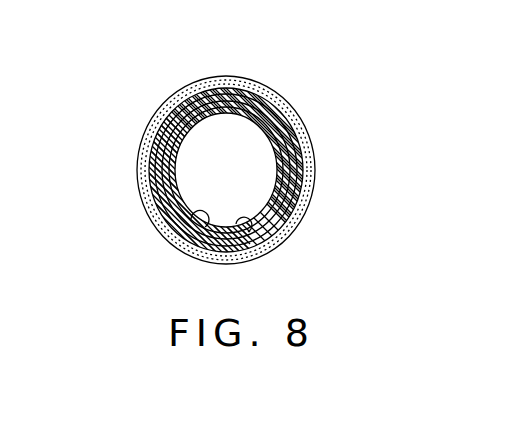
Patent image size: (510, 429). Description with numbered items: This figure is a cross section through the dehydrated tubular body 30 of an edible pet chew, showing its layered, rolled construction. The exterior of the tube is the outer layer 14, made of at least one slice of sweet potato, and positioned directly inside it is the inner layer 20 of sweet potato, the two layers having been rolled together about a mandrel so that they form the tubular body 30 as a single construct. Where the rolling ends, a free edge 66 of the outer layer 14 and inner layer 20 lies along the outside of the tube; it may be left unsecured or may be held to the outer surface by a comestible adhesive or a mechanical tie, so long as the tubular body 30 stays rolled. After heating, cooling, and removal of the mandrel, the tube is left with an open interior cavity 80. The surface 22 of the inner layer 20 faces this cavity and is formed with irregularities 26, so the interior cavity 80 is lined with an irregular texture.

The tubular body 30 is at (140, 120).
The outer layer 14 is at (273, 98).
The free edge 66 is at (313, 162).
The inner layer 20 is at (298, 212).
The surface 22 is at (248, 233).
The irregularities 26 is at (203, 222).
The interior cavity 80 is at (212, 168).